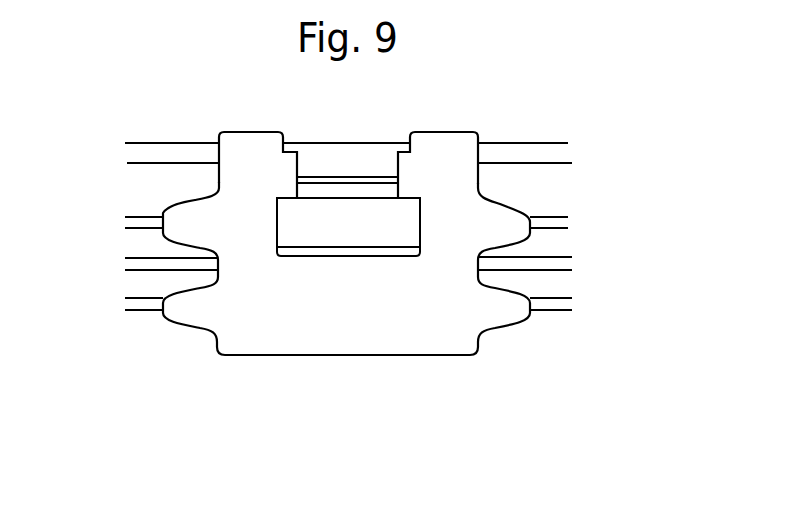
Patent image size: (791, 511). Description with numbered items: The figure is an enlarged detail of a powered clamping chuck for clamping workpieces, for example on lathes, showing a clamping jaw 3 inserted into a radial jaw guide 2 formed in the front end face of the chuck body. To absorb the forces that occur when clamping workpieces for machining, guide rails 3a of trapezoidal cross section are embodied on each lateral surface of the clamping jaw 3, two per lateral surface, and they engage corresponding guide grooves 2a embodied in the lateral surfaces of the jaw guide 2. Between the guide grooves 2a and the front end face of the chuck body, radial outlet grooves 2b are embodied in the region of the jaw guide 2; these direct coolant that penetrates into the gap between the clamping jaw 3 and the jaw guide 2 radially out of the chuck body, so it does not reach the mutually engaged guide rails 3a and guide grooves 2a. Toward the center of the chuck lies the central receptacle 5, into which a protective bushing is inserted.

The jaw guide 2 is at (218, 157).
The guide groove 2a is at (180, 204).
The radial outlet groove 2b is at (218, 181).
The clamping jaw 3 is at (275, 323).
The guide rail 3a is at (180, 235).
The central receptacle 5 is at (219, 142).